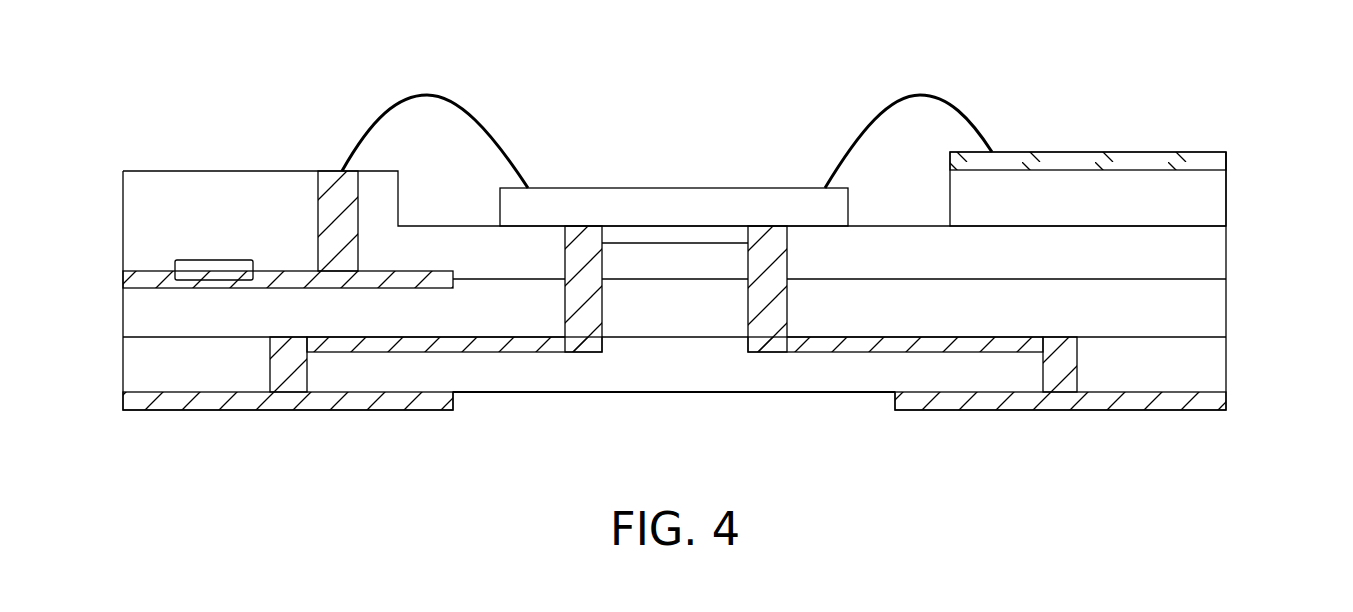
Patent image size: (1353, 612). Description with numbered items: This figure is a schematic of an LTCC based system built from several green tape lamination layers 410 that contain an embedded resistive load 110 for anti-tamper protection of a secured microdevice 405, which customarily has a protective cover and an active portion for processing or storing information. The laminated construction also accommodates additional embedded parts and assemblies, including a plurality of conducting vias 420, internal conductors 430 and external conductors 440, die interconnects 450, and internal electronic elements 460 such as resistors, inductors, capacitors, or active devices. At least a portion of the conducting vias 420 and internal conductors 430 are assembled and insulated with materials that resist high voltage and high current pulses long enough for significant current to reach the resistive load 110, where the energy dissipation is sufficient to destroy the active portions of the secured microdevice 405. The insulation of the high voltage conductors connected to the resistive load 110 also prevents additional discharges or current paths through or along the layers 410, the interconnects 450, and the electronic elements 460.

The embedded resistive load 110 is at (680, 232).
The secured microdevice 405 is at (742, 150).
The green tape lamination layers 410 is at (1240, 247).
The conducting vias 420 is at (278, 370).
The internal conductors 430 is at (852, 368).
The external conductors 440 is at (1132, 127).
The die interconnects 450 is at (388, 90).
The internal electronic elements 460 is at (212, 240).